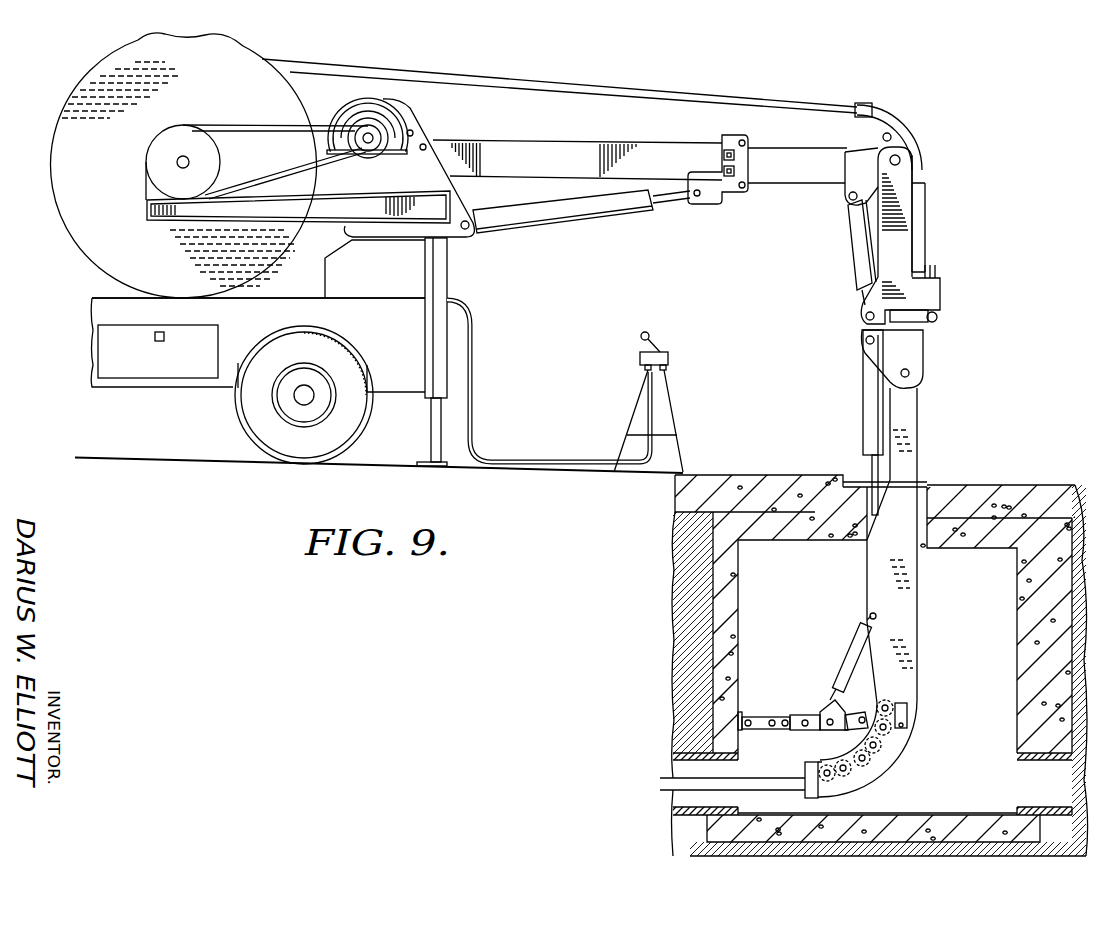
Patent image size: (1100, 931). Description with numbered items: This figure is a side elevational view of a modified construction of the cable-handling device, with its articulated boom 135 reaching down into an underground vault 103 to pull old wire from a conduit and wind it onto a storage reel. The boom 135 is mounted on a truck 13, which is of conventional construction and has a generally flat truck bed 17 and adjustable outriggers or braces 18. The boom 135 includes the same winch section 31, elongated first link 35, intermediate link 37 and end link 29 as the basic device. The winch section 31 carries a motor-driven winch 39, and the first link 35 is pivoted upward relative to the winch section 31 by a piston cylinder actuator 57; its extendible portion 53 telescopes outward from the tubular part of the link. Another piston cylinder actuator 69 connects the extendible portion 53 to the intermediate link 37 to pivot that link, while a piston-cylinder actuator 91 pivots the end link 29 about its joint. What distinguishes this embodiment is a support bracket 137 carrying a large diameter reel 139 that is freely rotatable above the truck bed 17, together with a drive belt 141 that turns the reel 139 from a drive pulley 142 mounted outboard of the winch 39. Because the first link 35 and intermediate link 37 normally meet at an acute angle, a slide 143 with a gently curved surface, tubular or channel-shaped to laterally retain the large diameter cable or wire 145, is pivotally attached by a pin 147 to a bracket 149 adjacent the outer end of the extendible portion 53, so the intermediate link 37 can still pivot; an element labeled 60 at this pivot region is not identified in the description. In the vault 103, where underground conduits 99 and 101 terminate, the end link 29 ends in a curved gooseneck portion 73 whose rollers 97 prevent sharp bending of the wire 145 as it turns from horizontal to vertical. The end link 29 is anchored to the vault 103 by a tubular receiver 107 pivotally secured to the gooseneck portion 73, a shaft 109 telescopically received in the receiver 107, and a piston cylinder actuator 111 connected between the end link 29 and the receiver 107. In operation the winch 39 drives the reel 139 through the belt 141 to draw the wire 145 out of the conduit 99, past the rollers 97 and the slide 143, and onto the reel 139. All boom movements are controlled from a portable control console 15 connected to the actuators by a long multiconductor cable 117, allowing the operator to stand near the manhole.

The truck 13 is at (92, 321).
The portable control console 15 is at (668, 352).
The truck bed 17 is at (103, 298).
The adjustable outriggers or braces 18 is at (430, 433).
The end link 29 is at (920, 432).
The winch section 31 is at (414, 117).
The first link 35 is at (591, 141).
The intermediate link 37 is at (927, 222).
The winch 39 is at (356, 104).
The extendible portion 53 is at (812, 170).
The piston cylinder actuator 57 is at (586, 215).
The pivot pin 60 is at (902, 162).
The piston cylinder actuator 69 is at (853, 235).
The curved gooseneck portion 73 is at (862, 776).
The piston-cylinder actuator 91 is at (868, 392).
The rollers 97 is at (890, 749).
The underground conduit 99 is at (718, 798).
The underground conduit 101 is at (1035, 812).
The underground vault 103 is at (1030, 640).
The tubular receiver 107 is at (826, 687).
The shaft 109 is at (779, 690).
The piston cylinder actuator 111 is at (858, 655).
The multiconductor cable 117 is at (530, 460).
The articulated boom 135 is at (624, 422).
The support bracket 137 is at (272, 205).
The large diameter reel 139 is at (68, 93).
The drive belt 141 is at (277, 102).
The drive pulley 142 is at (367, 147).
The slide 143 is at (918, 140).
The large diameter cable or wire 145 is at (632, 64).
The pin 147 is at (890, 132).
The bracket 149 is at (862, 143).